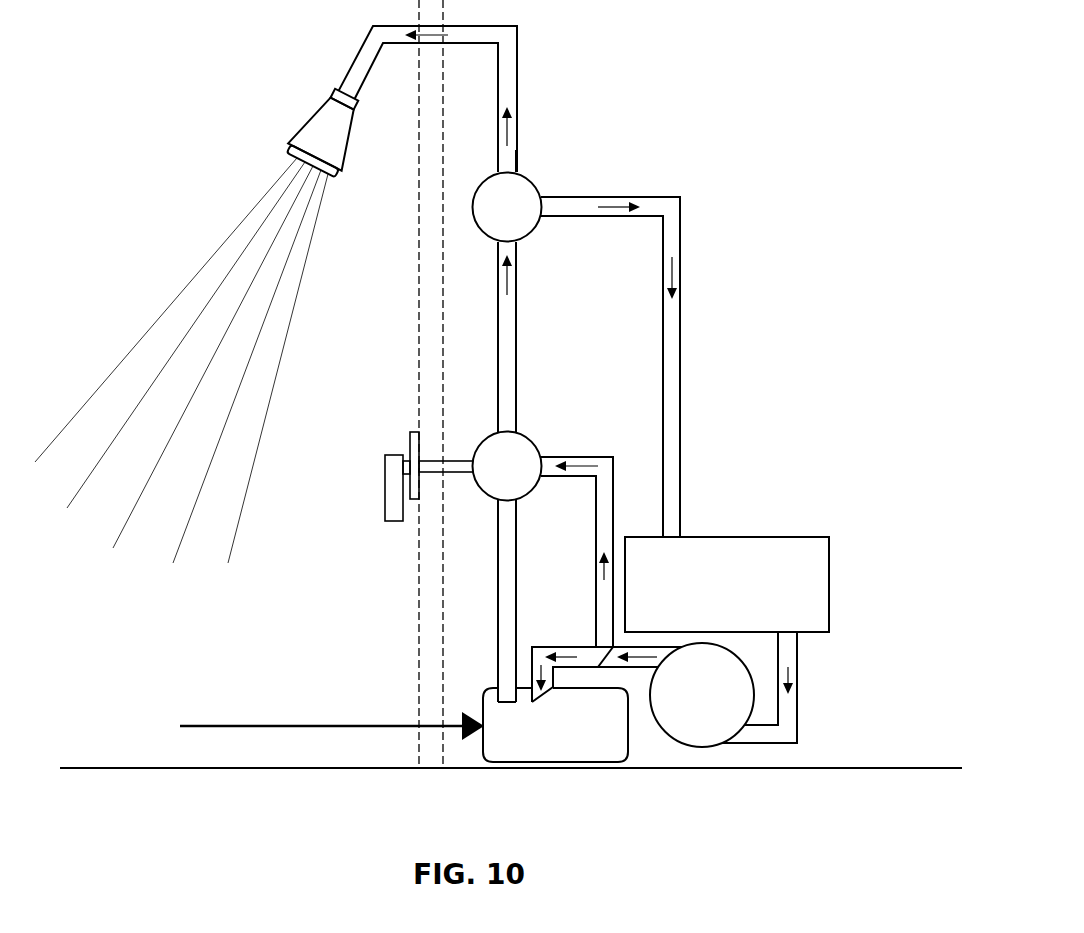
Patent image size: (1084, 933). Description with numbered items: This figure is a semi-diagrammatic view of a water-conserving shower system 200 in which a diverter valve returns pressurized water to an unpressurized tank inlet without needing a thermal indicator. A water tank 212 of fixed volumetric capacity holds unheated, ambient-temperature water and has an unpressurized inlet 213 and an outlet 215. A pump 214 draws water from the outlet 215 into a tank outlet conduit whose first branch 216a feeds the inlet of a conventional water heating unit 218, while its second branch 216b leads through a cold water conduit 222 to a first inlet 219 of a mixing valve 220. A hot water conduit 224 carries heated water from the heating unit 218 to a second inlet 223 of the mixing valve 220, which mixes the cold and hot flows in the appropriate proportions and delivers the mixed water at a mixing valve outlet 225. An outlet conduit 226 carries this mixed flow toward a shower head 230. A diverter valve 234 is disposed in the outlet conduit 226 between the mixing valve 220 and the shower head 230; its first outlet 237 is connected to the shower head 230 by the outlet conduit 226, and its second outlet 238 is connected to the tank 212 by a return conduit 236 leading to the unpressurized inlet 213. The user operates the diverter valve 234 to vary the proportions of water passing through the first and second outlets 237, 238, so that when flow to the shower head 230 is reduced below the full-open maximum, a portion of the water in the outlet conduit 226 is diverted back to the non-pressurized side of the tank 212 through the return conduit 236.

The water-conserving shower system 200 is at (599, 49).
The water tank 212 is at (829, 583).
The unpressurized inlet 213 is at (683, 537).
The pump 214 is at (683, 724).
The outlet 215 is at (786, 632).
The first branch 216a is at (548, 647).
The second branch 216b is at (596, 522).
The water heating unit 218 is at (243, 718).
The first inlet 219 is at (541, 457).
The mixing valve 220 is at (531, 441).
The cold water conduit 222 is at (578, 477).
The second inlet 223 is at (484, 490).
The hot water conduit 224 is at (497, 607).
The mixing valve outlet 225 is at (484, 440).
The outlet conduit 226 is at (517, 350).
The shower head 230 is at (305, 125).
The diverter valve 234 is at (530, 183).
The return conduit 236 is at (681, 240).
The first outlet 237 is at (484, 181).
The second outlet 238 is at (534, 229).